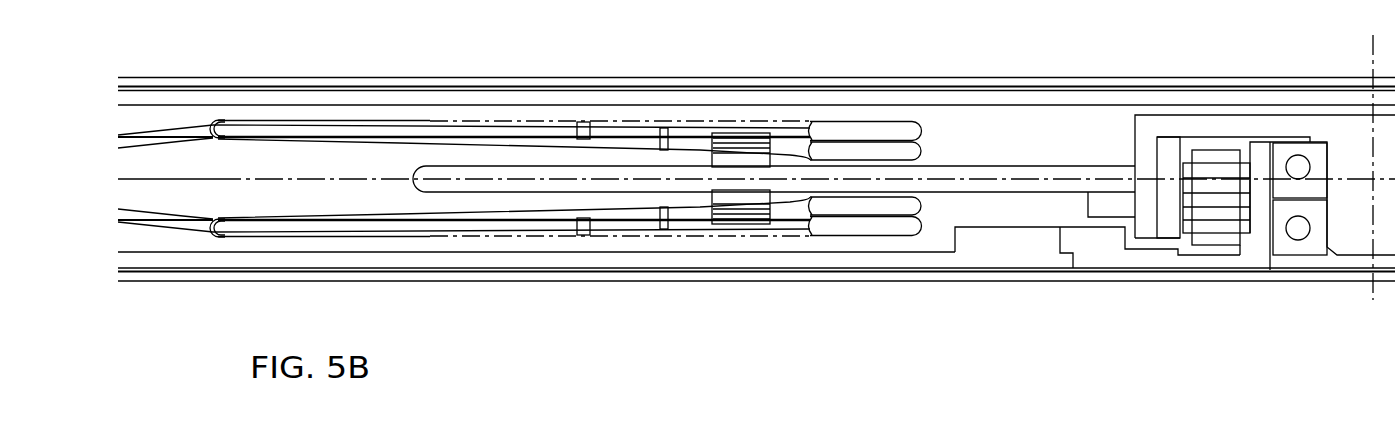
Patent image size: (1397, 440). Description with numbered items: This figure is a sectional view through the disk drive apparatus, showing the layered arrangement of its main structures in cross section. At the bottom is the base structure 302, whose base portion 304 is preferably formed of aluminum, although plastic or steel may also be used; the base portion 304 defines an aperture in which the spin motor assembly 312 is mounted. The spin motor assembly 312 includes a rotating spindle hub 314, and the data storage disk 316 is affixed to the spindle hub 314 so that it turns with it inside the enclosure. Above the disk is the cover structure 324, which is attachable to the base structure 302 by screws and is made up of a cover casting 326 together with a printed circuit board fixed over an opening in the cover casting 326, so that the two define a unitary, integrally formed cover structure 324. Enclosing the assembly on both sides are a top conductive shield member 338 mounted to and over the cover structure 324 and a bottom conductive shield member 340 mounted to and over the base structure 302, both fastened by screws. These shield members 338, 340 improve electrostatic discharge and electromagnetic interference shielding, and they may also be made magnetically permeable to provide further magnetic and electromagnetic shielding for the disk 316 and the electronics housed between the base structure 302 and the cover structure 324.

The base structure 302 is at (1000, 255).
The base portion 304 is at (815, 258).
The spin motor assembly 312 is at (1150, 274).
The rotating spindle hub 314 is at (1352, 243).
The data storage disk 316 is at (1028, 172).
The cover structure 324 is at (722, 84).
The cover casting 326 is at (632, 96).
The top conductive shield member 338 is at (1155, 80).
The bottom conductive shield member 340 is at (565, 284).